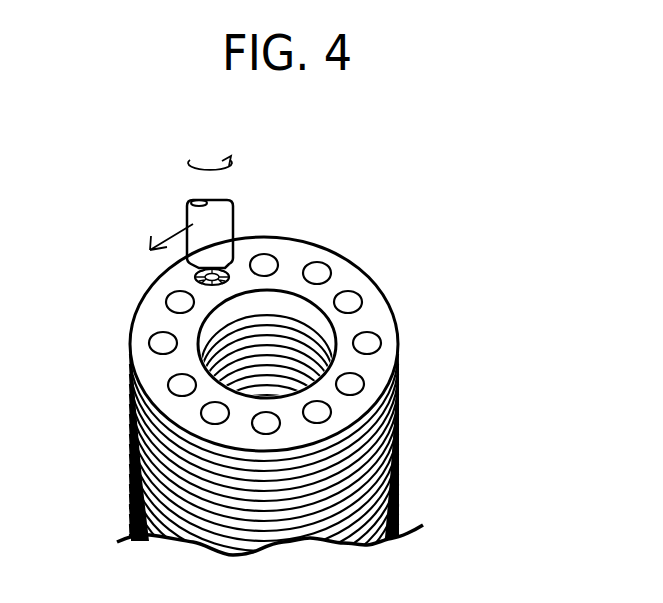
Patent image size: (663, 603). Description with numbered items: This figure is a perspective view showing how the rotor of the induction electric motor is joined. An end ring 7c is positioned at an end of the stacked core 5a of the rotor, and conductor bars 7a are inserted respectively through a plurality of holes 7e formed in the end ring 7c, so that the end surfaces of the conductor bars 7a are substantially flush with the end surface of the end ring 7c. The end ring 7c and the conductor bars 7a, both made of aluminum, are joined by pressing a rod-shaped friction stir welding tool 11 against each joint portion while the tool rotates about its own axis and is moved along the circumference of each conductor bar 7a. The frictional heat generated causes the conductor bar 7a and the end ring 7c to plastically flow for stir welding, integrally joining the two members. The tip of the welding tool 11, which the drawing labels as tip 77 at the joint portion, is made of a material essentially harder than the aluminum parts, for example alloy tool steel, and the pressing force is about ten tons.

The stacked core 5a is at (399, 430).
The conductor bar 7a is at (317, 274).
The end ring 7c is at (350, 282).
The hole 7e is at (381, 343).
The friction stir welding tool 11 is at (226, 222).
The brush 77 is at (196, 276).